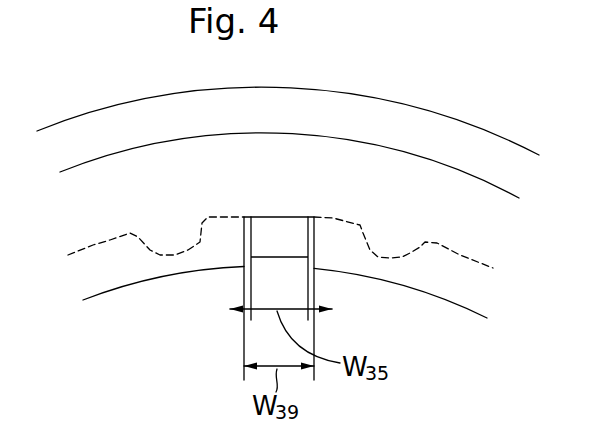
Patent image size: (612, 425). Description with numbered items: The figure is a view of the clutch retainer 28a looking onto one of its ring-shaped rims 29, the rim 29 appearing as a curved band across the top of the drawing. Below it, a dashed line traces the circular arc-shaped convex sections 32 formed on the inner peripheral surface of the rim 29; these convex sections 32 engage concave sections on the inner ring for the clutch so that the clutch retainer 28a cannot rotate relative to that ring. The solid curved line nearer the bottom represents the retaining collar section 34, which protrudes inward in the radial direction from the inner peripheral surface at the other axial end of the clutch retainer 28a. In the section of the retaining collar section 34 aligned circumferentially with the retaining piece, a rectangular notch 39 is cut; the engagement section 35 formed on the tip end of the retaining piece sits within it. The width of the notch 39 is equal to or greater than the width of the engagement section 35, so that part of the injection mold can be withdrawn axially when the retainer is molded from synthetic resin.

The clutch retainer 28a is at (402, 178).
The rim 29 is at (248, 151).
The convex section 32 is at (170, 240).
The retaining collar section 34 is at (445, 275).
The engagement section 35 is at (297, 236).
The notch 39 is at (251, 232).